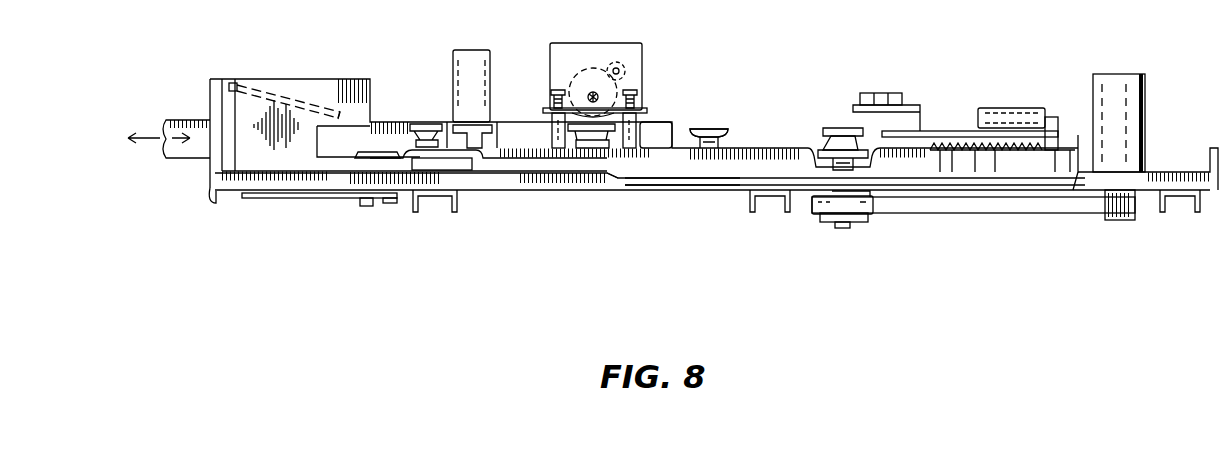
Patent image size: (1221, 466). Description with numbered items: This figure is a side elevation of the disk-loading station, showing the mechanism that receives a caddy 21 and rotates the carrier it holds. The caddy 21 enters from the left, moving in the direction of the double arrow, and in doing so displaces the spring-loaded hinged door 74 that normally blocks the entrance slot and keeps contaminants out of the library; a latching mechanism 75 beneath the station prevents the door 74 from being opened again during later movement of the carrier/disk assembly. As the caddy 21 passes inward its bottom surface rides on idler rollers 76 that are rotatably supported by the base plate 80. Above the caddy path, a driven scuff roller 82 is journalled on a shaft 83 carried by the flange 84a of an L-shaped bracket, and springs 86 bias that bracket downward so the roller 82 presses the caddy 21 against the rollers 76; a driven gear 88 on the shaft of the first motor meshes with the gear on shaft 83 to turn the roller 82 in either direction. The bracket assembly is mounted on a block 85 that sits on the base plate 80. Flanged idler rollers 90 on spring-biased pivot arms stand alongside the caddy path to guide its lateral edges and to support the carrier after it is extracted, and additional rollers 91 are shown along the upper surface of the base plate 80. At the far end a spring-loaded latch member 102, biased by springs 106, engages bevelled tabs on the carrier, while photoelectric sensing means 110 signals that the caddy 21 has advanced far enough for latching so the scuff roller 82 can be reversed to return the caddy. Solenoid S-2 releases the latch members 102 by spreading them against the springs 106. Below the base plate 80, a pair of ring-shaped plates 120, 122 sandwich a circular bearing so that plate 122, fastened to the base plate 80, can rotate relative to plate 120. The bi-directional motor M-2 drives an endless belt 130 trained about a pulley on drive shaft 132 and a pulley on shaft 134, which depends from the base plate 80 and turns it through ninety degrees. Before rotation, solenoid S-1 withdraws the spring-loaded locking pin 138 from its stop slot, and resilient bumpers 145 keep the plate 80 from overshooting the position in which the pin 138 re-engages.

The caddy 21 is at (196, 120).
The hinged door 74 is at (288, 82).
The latching mechanism 75 is at (302, 199).
The idler rollers 76 is at (385, 157).
The base plate 80 is at (710, 174).
The scuff roller 82 is at (552, 70).
The shaft 83 is at (592, 91).
The flange 84a is at (592, 64).
The block 85 is at (612, 130).
The springs 86 is at (551, 104).
The driven gear 88 is at (630, 64).
The flanged idler rollers 90 is at (727, 120).
The roller 91 is at (418, 122).
The latch member 102 is at (900, 140).
The springs 106 is at (952, 142).
The photoelectric sensing means 110 is at (885, 86).
The ring-shaped plate 120 is at (626, 179).
The ring-shaped plate 122 is at (656, 179).
The endless drive belt 130 is at (948, 214).
The drive shaft 132 is at (816, 214).
The shaft 134 is at (845, 229).
The locking pin 138 is at (485, 148).
The resilient bumpers 145 is at (440, 166).
The solenoid S-1 is at (475, 50).
The solenoid S-2 is at (1050, 108).
The bi-directional motor M-2 is at (1147, 100).